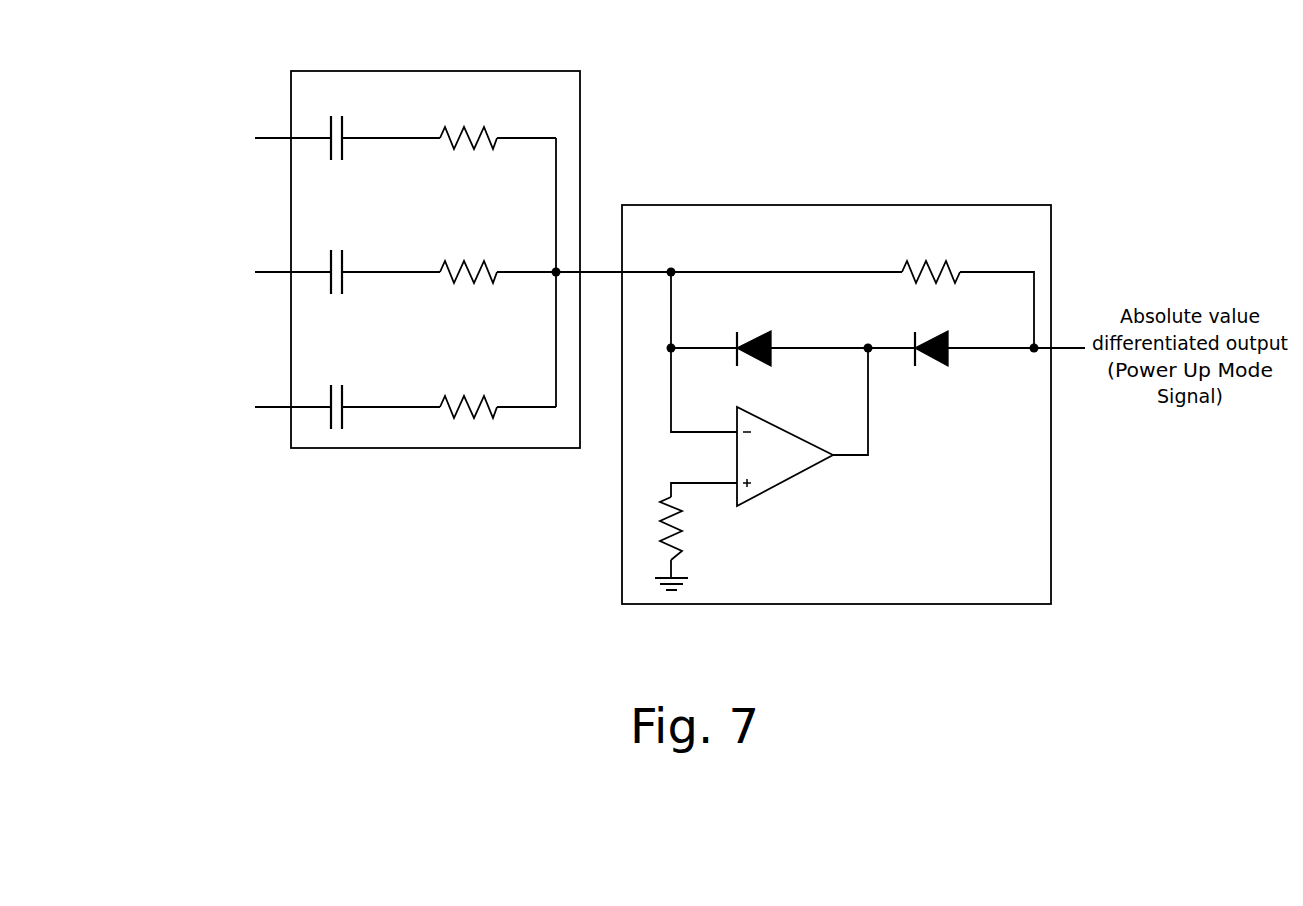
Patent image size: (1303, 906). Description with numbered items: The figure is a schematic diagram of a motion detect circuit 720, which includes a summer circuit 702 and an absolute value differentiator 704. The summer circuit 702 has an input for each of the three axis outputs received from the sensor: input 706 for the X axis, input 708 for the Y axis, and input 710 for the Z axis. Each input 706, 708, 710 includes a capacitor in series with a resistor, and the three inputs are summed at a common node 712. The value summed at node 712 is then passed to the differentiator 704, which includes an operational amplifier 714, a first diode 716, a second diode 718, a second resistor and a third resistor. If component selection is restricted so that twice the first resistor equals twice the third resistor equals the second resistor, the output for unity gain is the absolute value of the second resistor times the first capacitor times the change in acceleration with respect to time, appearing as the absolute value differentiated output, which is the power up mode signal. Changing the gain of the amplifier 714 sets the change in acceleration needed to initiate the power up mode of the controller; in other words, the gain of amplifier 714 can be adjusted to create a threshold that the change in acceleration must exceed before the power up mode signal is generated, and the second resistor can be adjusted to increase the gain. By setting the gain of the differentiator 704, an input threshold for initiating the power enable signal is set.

The summer circuit 702 is at (430, 263).
The absolute value differentiator 704 is at (853, 391).
The input 706 is at (276, 137).
The input 708 is at (276, 271).
The input 710 is at (276, 406).
The common node 712 is at (557, 268).
The operational amplifier 714 is at (793, 480).
The first diode 716 is at (754, 331).
The second diode 718 is at (932, 331).
The motion detect circuit 720 is at (908, 112).